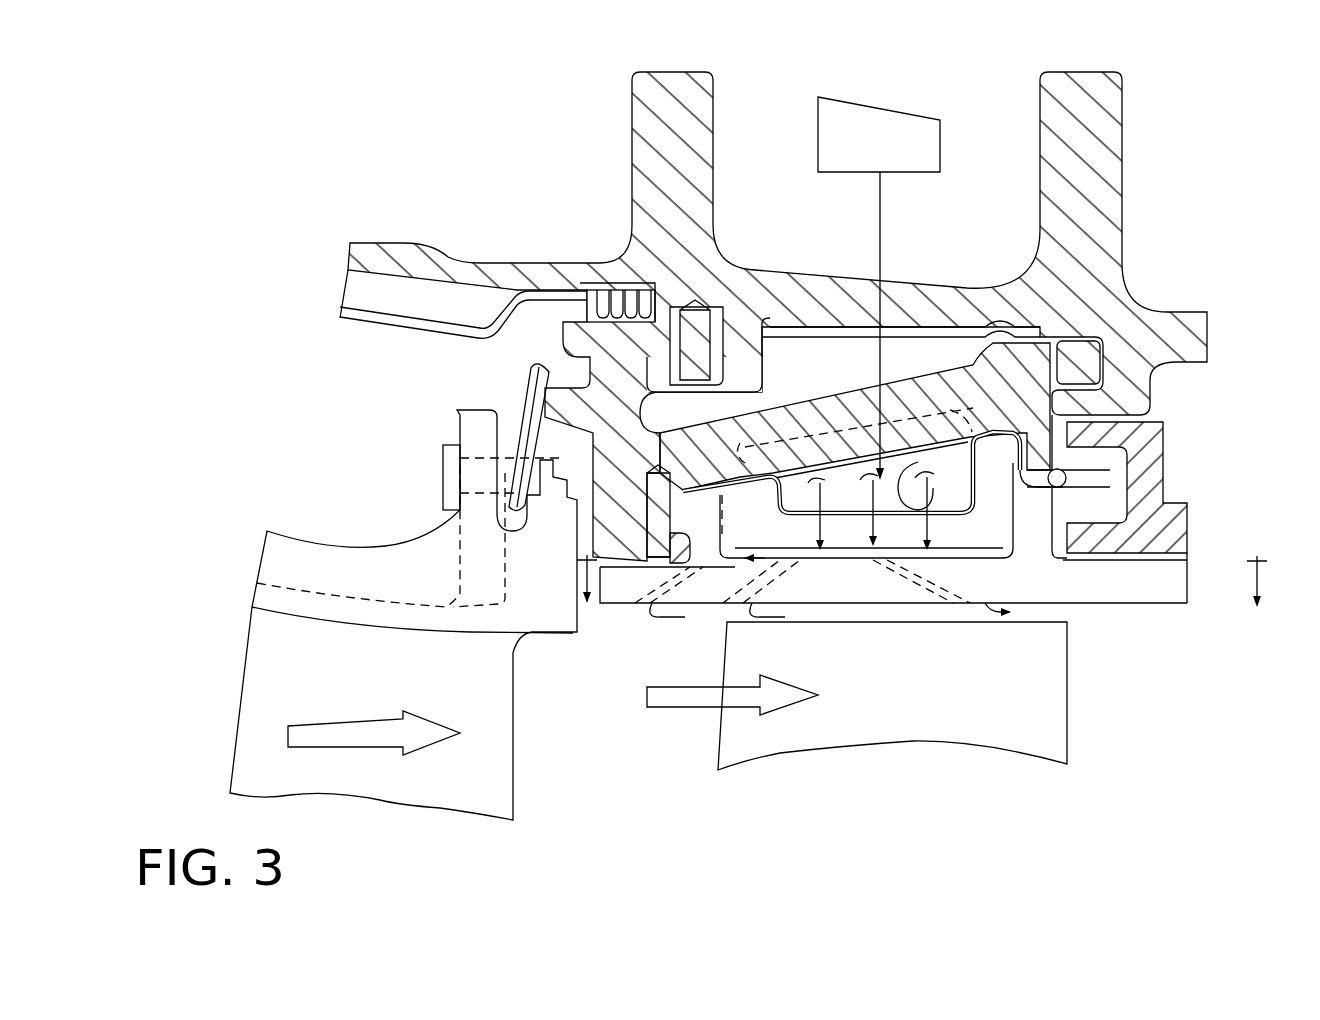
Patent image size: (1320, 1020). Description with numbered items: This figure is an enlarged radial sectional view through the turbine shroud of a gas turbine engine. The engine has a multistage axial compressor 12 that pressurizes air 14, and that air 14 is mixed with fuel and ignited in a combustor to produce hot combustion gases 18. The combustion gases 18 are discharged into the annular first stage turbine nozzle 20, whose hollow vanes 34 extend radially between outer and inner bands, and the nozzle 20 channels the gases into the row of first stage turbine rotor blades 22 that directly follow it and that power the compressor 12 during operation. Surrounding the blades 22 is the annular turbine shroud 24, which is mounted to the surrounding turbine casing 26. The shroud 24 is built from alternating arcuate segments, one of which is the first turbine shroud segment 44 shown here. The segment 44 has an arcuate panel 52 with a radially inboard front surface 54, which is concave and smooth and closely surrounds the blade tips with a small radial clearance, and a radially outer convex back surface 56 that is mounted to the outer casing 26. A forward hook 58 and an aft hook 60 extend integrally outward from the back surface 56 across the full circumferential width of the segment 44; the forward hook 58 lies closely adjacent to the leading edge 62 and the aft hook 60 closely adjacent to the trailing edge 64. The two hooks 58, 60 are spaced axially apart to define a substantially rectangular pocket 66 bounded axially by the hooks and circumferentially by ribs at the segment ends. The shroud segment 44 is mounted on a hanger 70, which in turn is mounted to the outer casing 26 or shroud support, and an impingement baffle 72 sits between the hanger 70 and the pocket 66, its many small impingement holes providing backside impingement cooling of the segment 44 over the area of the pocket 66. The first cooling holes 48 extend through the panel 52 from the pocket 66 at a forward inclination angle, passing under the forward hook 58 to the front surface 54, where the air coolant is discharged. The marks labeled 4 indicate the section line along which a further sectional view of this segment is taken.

The multistage axial compressor 12 is at (858, 159).
The pressurized air 14 is at (882, 232).
The hot combustion gases 18 is at (357, 726).
The first stage turbine nozzle 20 is at (290, 532).
The first stage turbine rotor blades 22 is at (892, 702).
The turbine shroud 24 is at (1149, 508).
The turbine casing 26 is at (925, 283).
The hollow vanes 34 is at (461, 780).
The first turbine shroud segment 44 is at (1192, 555).
The first cooling holes 48 is at (692, 600).
The panel 52 is at (1113, 592).
The front surface 54 is at (1106, 604).
The back surface 56 is at (1143, 558).
The forward hook 58 is at (681, 524).
The aft hook 60 is at (1043, 515).
The leading edge 62 is at (598, 606).
The trailing edge 64 is at (1187, 604).
The pocket 66 is at (978, 546).
The hanger 70 is at (848, 395).
The impingement baffle 72 is at (908, 462).
The section line 4- 4 is at (921, 598).